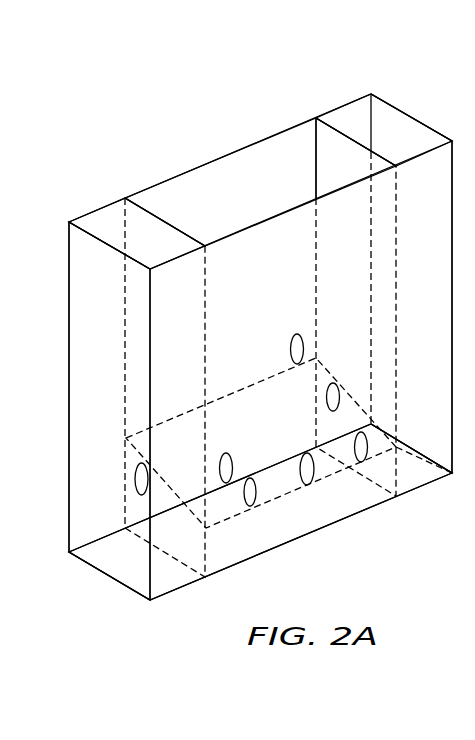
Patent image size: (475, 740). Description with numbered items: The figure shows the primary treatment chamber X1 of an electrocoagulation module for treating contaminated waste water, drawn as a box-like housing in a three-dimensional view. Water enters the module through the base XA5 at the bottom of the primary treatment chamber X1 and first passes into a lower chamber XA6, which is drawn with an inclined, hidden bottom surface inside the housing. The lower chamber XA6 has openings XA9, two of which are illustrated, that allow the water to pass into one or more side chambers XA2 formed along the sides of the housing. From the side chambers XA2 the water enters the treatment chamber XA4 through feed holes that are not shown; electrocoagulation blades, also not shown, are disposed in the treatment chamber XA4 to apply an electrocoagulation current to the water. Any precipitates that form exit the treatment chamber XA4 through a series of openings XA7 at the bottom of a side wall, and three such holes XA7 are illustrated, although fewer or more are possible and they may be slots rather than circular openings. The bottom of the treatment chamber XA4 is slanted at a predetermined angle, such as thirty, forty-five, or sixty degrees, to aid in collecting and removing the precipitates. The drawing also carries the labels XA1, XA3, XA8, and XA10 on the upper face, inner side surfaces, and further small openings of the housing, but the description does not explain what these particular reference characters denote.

The primary treatment chamber X1 is at (260, 329).
The top opening surface XA1 is at (260, 182).
The side chambers XA2 is at (260, 347).
The inner side surface XA3 is at (406, 197).
The treatment chamber XA4 is at (260, 181).
The base XA5 is at (260, 512).
The lower chamber XA6 is at (289, 443).
The openings XA7 is at (362, 462).
The rear hole XA8 is at (291, 348).
The openings XA9 is at (335, 390).
The front hole XA10 is at (262, 456).